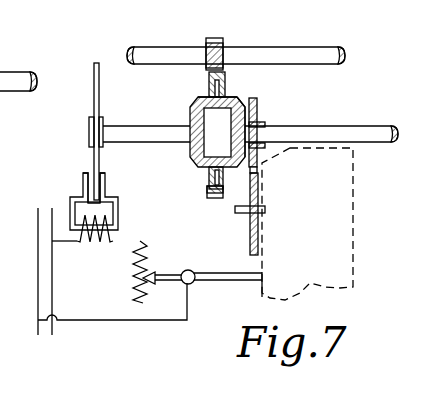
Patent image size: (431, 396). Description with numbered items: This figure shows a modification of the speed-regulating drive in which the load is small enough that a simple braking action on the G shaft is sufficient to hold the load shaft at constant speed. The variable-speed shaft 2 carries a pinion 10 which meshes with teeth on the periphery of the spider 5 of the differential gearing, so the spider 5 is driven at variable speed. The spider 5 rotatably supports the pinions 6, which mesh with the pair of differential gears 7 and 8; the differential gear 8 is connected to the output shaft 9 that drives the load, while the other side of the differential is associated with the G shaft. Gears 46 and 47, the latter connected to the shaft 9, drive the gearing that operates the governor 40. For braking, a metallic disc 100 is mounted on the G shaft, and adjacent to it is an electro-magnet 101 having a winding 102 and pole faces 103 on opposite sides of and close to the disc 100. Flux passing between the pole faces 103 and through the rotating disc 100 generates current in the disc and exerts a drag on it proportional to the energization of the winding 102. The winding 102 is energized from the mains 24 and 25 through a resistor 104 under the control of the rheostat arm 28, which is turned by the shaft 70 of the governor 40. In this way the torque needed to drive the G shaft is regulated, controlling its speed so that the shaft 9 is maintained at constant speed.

The shaft 2 is at (255, 50).
The spider 5 is at (229, 78).
The pinions 6 is at (200, 97).
The differential gear 7 is at (190, 108).
The differential gear 8 is at (240, 110).
The output shaft 9 is at (350, 135).
The pinion 10 is at (206, 44).
The main 24 is at (36, 289).
The main 25 is at (54, 289).
The rheostat arm 28 is at (175, 271).
The governor 40 is at (353, 218).
The gear 46 is at (248, 232).
The gear 47 is at (258, 118).
The shaft 70 is at (221, 274).
The metallic disc 100 is at (99, 96).
The electro-magnet 101 is at (110, 186).
The winding 102 is at (93, 245).
The pole faces 103 is at (84, 176).
The resistor 104 is at (136, 296).
The G shaft G is at (156, 127).